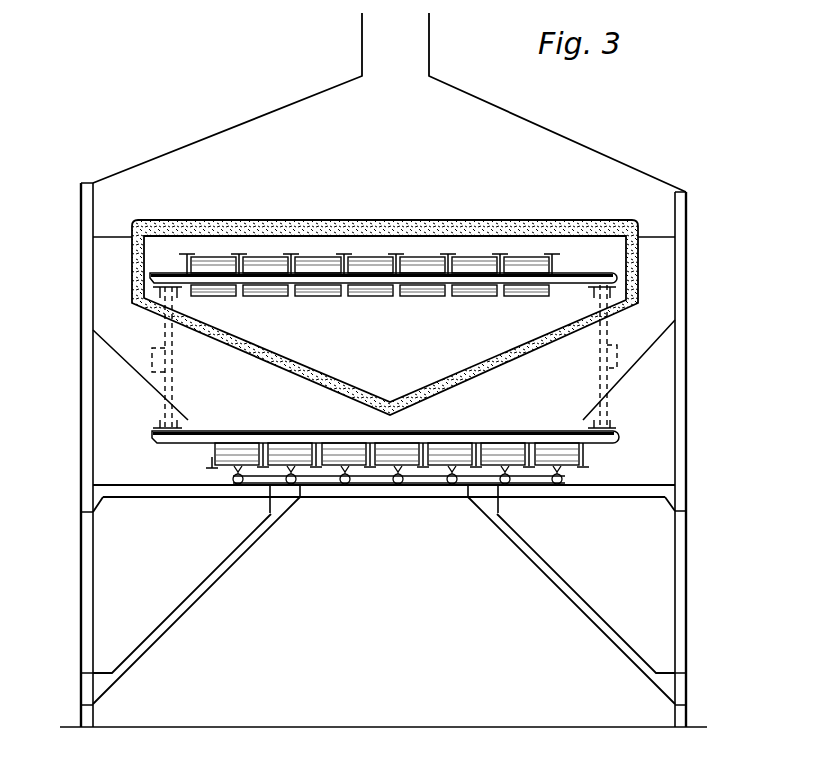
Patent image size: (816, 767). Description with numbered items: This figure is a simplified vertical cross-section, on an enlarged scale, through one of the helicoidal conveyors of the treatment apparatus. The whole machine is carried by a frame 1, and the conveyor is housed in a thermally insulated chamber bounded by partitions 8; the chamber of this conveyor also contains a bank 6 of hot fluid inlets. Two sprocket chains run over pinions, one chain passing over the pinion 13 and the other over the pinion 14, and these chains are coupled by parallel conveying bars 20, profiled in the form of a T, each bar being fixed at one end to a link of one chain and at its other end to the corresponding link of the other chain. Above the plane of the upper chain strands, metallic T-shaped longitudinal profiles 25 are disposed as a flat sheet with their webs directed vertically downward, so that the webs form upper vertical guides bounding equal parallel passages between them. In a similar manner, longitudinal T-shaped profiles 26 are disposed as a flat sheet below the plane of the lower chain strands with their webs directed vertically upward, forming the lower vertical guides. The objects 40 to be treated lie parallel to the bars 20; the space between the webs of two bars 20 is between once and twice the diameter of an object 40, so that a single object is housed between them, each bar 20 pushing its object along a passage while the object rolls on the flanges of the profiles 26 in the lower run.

The frame 1 is at (622, 657).
The bank of hot fluid inlets 6 is at (387, 485).
The partitions 8 is at (405, 222).
The pinion 13 is at (607, 336).
The pinion 14 is at (165, 334).
The conveying bars 20 is at (585, 279).
The upper longitudinal T-shaped profiles 25 is at (237, 254).
The lower longitudinal T-shaped profiles 26 is at (263, 470).
The objects 40 is at (473, 268).